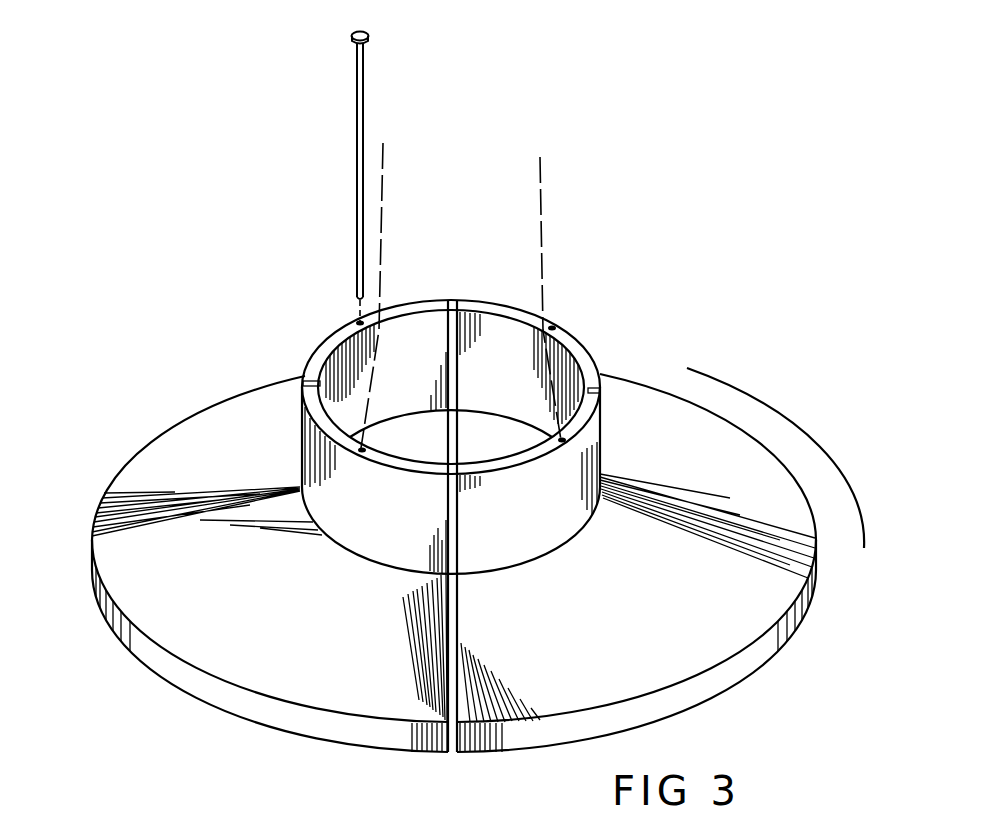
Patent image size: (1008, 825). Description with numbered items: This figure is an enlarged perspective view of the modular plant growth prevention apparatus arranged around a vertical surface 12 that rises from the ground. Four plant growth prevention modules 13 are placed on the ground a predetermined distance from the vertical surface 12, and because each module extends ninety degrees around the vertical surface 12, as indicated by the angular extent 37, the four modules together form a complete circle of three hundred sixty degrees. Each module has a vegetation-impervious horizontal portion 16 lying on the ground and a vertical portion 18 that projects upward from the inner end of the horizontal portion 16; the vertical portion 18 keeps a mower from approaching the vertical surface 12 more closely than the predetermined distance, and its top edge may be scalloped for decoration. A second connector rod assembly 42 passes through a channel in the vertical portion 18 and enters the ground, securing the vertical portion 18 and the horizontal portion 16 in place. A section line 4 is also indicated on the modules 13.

The section line 4- 4 is at (810, 352).
The vertical surface 12 is at (540, 293).
The plant growth prevention module 13 is at (121, 453).
The vegetation-impervious horizontal portion 16 is at (733, 611).
The vertical portion 18 is at (600, 403).
The 90 degree extent 37 is at (795, 420).
The second connector rod assembly 42 is at (357, 153).